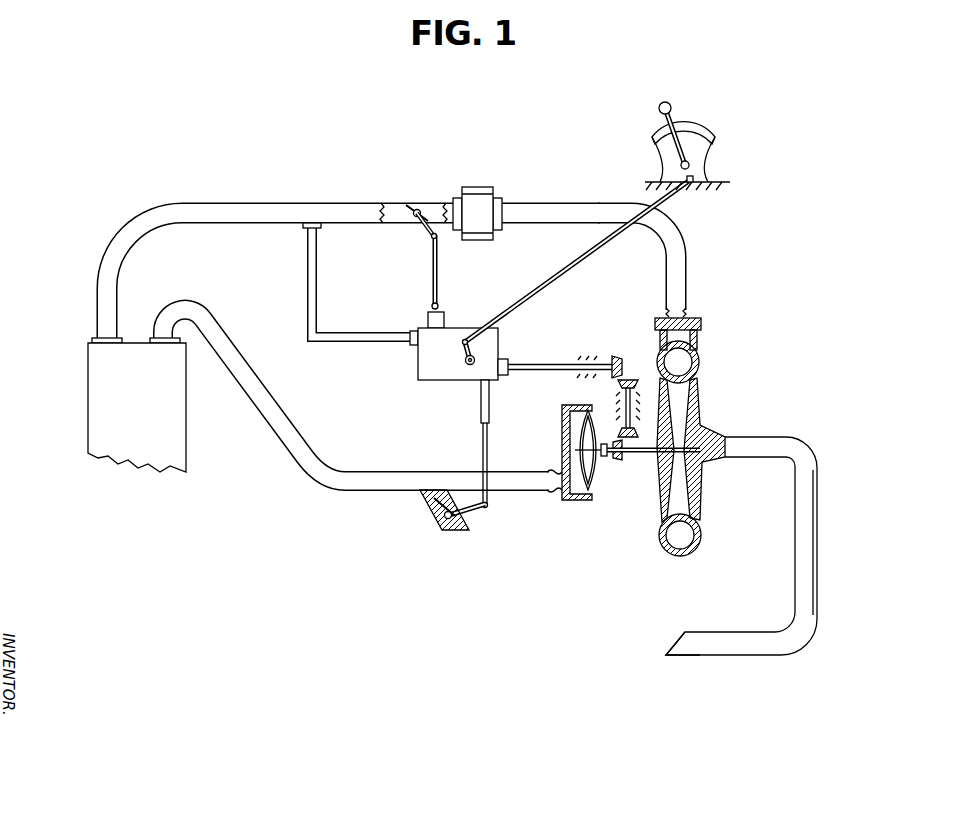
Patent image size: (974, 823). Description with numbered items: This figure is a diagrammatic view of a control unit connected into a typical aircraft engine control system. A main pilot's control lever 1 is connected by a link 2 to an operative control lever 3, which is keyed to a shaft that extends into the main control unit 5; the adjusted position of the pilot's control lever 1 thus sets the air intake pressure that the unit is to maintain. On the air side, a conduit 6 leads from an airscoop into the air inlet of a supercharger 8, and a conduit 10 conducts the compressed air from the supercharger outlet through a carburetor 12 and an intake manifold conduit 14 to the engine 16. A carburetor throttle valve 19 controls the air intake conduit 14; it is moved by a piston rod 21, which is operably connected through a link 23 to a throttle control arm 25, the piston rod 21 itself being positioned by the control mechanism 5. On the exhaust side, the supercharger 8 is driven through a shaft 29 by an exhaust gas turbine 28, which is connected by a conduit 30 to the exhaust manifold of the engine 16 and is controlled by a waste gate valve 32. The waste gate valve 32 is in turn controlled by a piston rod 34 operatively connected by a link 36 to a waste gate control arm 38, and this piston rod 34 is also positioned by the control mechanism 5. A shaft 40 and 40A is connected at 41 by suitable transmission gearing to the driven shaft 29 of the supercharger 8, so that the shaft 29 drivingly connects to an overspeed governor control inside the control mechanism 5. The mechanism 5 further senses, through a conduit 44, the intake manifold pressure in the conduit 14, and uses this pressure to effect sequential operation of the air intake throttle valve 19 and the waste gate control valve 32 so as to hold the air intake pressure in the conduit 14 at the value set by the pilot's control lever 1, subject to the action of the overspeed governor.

The main pilot's control lever 1 is at (675, 114).
The link 2 is at (583, 278).
The operative control lever 3 is at (468, 364).
The main control unit 5 is at (416, 369).
The conduit 6 is at (600, 640).
The supercharger 8 is at (704, 476).
The conduit 10 is at (690, 270).
The carburetor 12 is at (472, 158).
The intake manifold conduit 14 is at (333, 203).
The engine 16 is at (86, 374).
The carburetor throttle valve 19 is at (420, 206).
The piston rod 21 is at (443, 313).
The link 23 is at (438, 267).
The throttle control arm 25 is at (425, 234).
The exhaust gas turbine 28 is at (602, 494).
The shaft 29 is at (632, 455).
The conduit 30 is at (340, 492).
The waste gate valve 32 is at (466, 530).
The piston rod 34 is at (490, 405).
The link 36 is at (482, 440).
The waste gate control arm 38 is at (478, 509).
The shaft 40 is at (557, 372).
The shaft 40A is at (620, 390).
The transmission gearing connection 41 is at (620, 432).
The conduit 44 is at (307, 268).